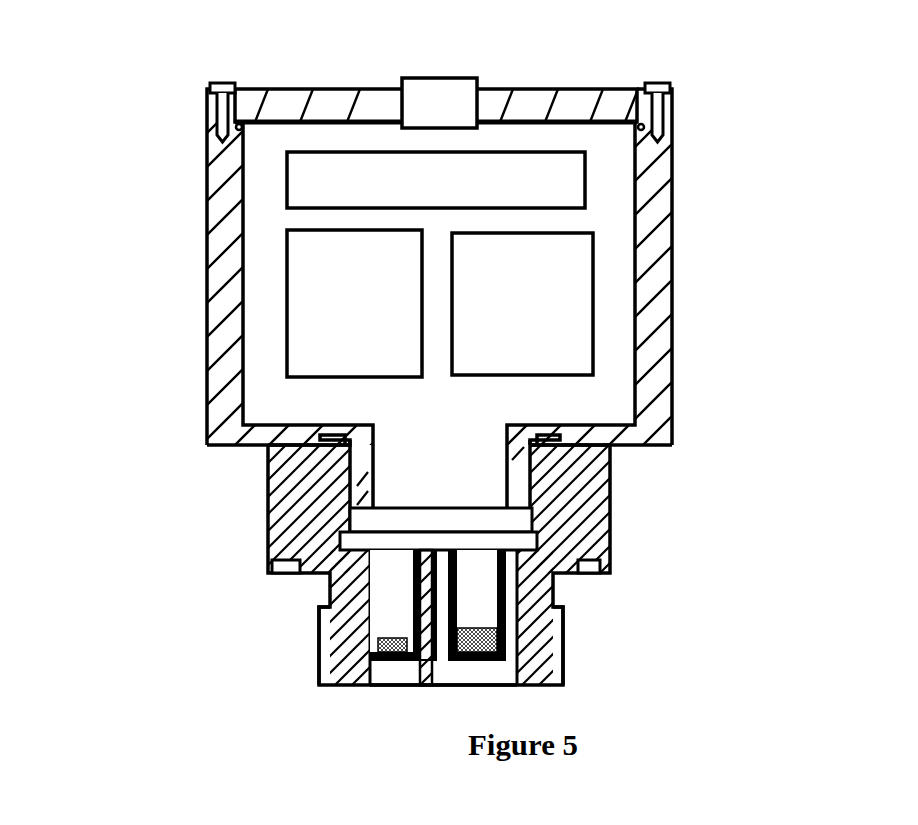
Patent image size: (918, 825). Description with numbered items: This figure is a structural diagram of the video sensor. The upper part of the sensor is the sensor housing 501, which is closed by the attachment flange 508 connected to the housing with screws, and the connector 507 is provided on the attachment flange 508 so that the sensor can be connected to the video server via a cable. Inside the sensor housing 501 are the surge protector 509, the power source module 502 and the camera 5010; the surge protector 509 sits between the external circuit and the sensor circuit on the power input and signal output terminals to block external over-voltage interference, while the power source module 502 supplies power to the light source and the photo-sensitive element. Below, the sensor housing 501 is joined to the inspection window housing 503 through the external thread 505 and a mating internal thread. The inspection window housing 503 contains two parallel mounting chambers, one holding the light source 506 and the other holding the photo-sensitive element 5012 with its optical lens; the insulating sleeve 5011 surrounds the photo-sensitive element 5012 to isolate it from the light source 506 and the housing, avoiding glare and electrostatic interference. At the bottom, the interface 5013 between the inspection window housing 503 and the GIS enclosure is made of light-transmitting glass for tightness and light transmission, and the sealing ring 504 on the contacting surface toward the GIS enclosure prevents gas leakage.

The sensor housing 501 is at (372, 285).
The power source module 502 is at (287, 277).
The inspection window housing 503 is at (341, 537).
The sealing ring 504 is at (334, 537).
The external thread 505 is at (332, 627).
The light source 506 is at (276, 621).
The connector 507 is at (516, 72).
The attachment flange 508 is at (506, 75).
The surge protector 509 is at (515, 156).
The camera 5010 is at (599, 302).
The insulating sleeve 5011 is at (600, 555).
The photo-sensitive element 5012 is at (617, 601).
The interface 5013 is at (558, 651).